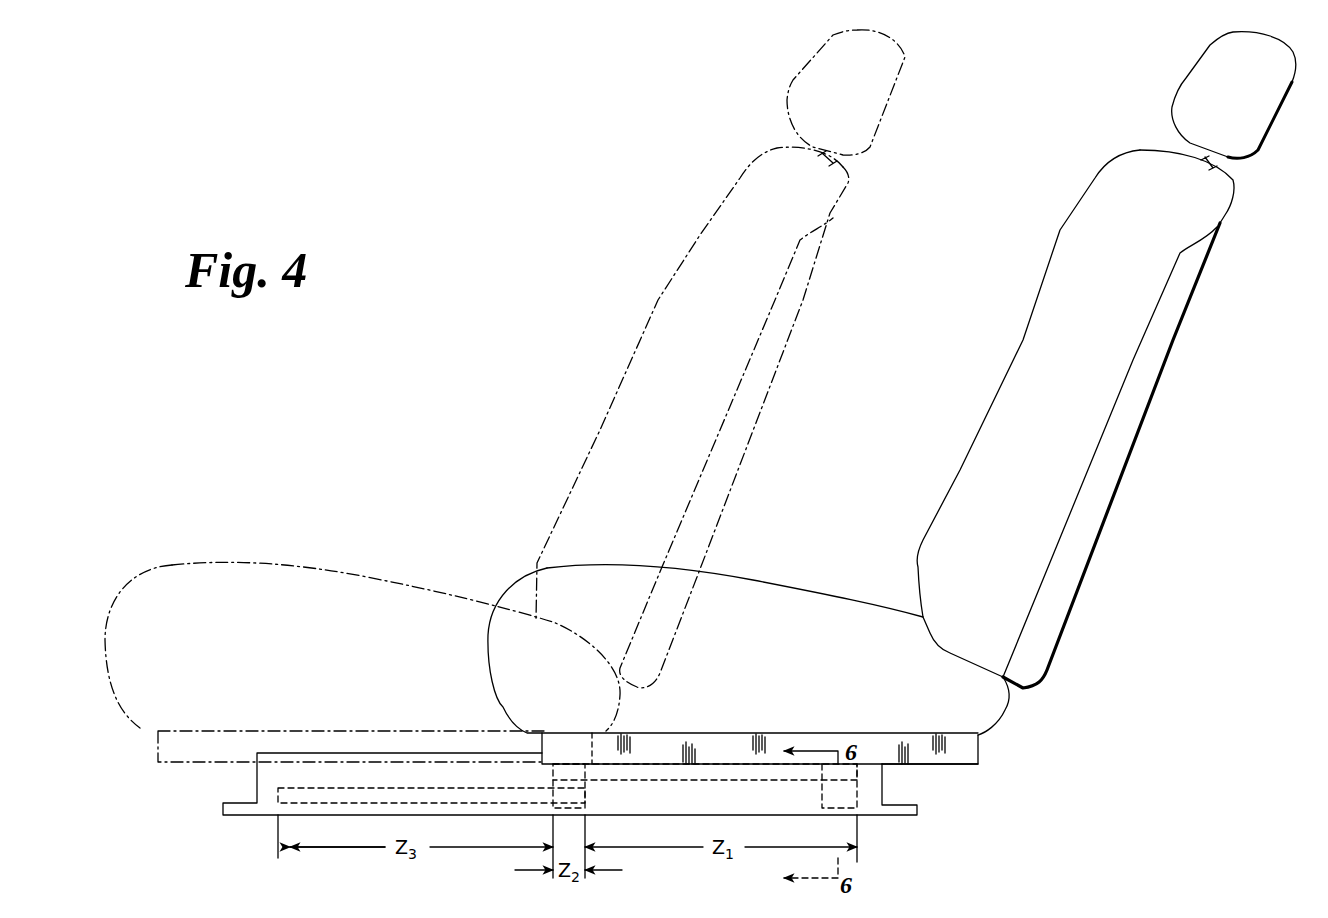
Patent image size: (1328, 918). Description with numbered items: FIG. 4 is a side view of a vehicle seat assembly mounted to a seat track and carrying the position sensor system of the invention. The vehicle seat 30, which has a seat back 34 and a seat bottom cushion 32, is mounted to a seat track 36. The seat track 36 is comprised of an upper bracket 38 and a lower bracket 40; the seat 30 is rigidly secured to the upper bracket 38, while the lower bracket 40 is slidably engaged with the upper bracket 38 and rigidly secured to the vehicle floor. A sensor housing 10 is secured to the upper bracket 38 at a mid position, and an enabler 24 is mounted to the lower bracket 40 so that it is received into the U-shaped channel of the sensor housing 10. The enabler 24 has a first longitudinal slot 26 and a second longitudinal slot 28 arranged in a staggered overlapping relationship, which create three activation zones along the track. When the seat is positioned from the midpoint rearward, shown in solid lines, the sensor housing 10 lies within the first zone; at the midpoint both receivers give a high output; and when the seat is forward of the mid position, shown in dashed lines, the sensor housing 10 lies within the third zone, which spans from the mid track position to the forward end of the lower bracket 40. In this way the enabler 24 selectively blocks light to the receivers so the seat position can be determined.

The sensor housing 10 is at (857, 808).
The enabler 24 is at (263, 768).
The first longitudinal slot 26 is at (620, 765).
The second longitudinal slot 28 is at (295, 797).
The vehicle seat 30 is at (853, 563).
The seat bottom cushion 32 is at (172, 565).
The seat back 34 is at (1013, 380).
The seat track 36 is at (330, 718).
The upper bracket 38 is at (963, 754).
The lower bracket 40 is at (490, 808).